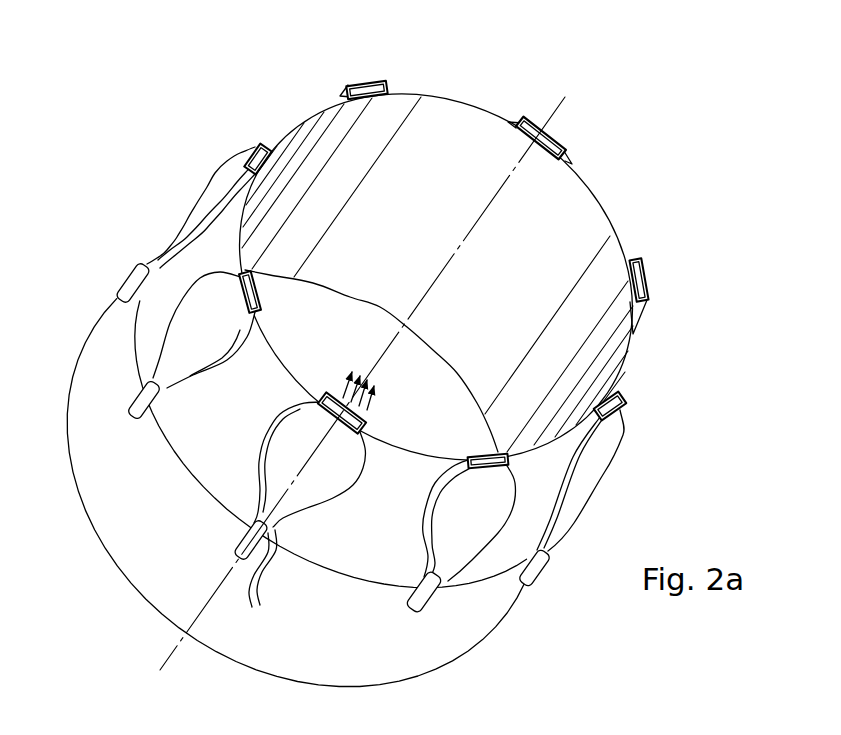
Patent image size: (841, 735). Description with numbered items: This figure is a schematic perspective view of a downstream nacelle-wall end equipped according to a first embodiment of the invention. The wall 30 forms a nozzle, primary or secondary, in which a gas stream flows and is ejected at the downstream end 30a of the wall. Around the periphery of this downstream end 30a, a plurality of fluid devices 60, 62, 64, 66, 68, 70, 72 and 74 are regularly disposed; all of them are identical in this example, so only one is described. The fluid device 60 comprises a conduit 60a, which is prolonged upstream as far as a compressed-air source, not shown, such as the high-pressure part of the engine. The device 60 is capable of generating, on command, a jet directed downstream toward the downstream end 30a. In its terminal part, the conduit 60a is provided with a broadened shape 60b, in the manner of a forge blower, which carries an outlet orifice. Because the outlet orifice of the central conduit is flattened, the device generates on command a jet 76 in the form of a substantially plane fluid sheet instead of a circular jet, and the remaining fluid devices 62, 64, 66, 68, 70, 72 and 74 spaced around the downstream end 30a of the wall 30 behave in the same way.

The wall 30 is at (85, 337).
The downstream end 30a is at (536, 493).
The fluid device 60 is at (257, 520).
The conduit 60a is at (239, 572).
The broadened shape 60b is at (257, 580).
The fluid device 62 is at (122, 421).
The fluid device 64 is at (211, 160).
The fluid device 66 is at (360, 78).
The fluid device 68 is at (562, 128).
The fluid device 70 is at (655, 261).
The fluid device 72 is at (626, 460).
The fluid device 74 is at (459, 569).
The jet 76 is at (393, 411).